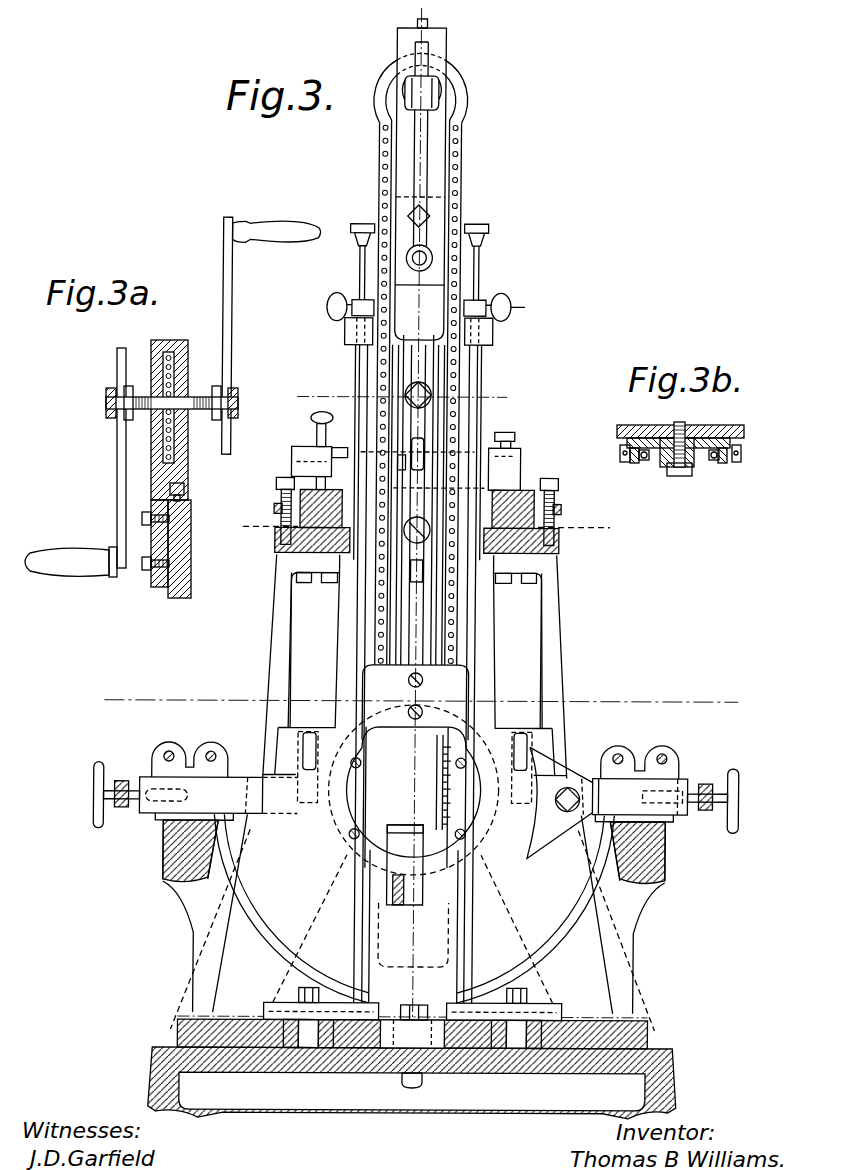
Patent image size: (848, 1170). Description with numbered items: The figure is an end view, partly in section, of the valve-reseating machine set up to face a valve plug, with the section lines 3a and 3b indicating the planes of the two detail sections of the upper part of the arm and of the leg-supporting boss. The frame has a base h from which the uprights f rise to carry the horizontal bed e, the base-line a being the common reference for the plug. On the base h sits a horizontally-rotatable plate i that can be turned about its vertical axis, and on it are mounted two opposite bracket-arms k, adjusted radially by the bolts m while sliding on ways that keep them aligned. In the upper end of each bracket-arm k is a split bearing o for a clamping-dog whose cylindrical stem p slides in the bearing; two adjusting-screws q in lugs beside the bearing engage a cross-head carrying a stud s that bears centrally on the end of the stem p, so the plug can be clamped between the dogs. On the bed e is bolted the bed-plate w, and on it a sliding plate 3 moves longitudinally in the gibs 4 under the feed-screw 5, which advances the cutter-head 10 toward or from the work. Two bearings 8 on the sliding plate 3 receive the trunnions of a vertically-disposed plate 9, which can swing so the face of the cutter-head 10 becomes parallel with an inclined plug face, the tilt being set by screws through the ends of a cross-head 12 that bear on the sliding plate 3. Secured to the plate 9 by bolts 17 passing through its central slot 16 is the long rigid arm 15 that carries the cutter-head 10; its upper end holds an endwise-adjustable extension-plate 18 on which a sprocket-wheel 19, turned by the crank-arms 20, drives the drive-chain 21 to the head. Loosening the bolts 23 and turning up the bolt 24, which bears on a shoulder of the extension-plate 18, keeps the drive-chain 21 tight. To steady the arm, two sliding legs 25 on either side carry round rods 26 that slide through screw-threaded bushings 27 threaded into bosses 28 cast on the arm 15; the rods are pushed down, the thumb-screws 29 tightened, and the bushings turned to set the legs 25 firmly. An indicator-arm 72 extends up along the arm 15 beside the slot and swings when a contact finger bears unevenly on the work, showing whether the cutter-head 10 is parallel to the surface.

In FIG. 3, the sliding plate 3 is at (401, 458).
In FIG. 3, the section line 3a 3a is at (426, 24).
In FIG. 3, the section line 3b 3b is at (400, 407).
In FIG. 3, the gibs 4 is at (303, 489).
In FIG. 3, the feed-screw 5 is at (412, 697).
In FIG. 3, the bearings 8 is at (320, 426).
In FIG. 3, the vertically-disposed plate 9 is at (490, 388).
In FIG. 3B, the vertically-disposed plate 9 is at (748, 431).
In FIG. 3, the cutter-head 10 is at (464, 731).
In FIG. 3, the cross-head 12 is at (300, 450).
In FIG. 3, the arm 15 is at (386, 354).
In FIG. 3A, the arm 15 is at (191, 551).
In FIG. 3B, the arm 15 is at (735, 446).
In FIG. 3, the central slot 16 is at (410, 610).
In FIG. 3, the bolts 17 is at (432, 395).
In FIG. 3, the extension-plate 18 is at (444, 185).
In FIG. 3A, the extension-plate 18 is at (188, 370).
In FIG. 3A, the sprocket-wheel 19 is at (176, 353).
In FIG. 3, the crank-arms 20 is at (406, 156).
In FIG. 3A, the crank-arms 20 is at (117, 478).
In FIG. 3, the drive-chain 21 is at (462, 132).
In FIG. 3B, the drive-chain 21 is at (716, 462).
In FIG. 3A, the bolts 23 is at (142, 562).
In FIG. 3A, the bolt 24 is at (186, 491).
In FIG. 3, the sliding legs 25 is at (352, 565).
In FIG. 3B, the sliding legs 25 is at (623, 455).
In FIG. 3, the round rods 26 is at (353, 263).
In FIG. 3, the screw-threaded bushings 27 is at (352, 302).
In FIG. 3, the bosses 28 is at (344, 333).
In FIG. 3, the thumb-screws 29 is at (512, 310).
In FIG. 3, the indicator-arm 72 is at (447, 433).
In FIG. 3, the base-line a is at (422, 523).
In FIG. 3, the horizontal bed e is at (270, 551).
In FIG. 3, the uprights f is at (280, 645).
In FIG. 3, the base h is at (329, 1064).
In FIG. 3, the horizontally-rotatable plate i is at (175, 1033).
In FIG. 3, the bracket-arms k is at (199, 893).
In FIG. 3, the bolts m is at (312, 988).
In FIG. 3, the split bearing o is at (165, 760).
In FIG. 3, the cylindrical stems p is at (220, 792).
In FIG. 3, the adjusting-screws q is at (98, 794).
In FIG. 3, the stud s is at (130, 806).
In FIG. 3, the bed-plate w is at (282, 500).